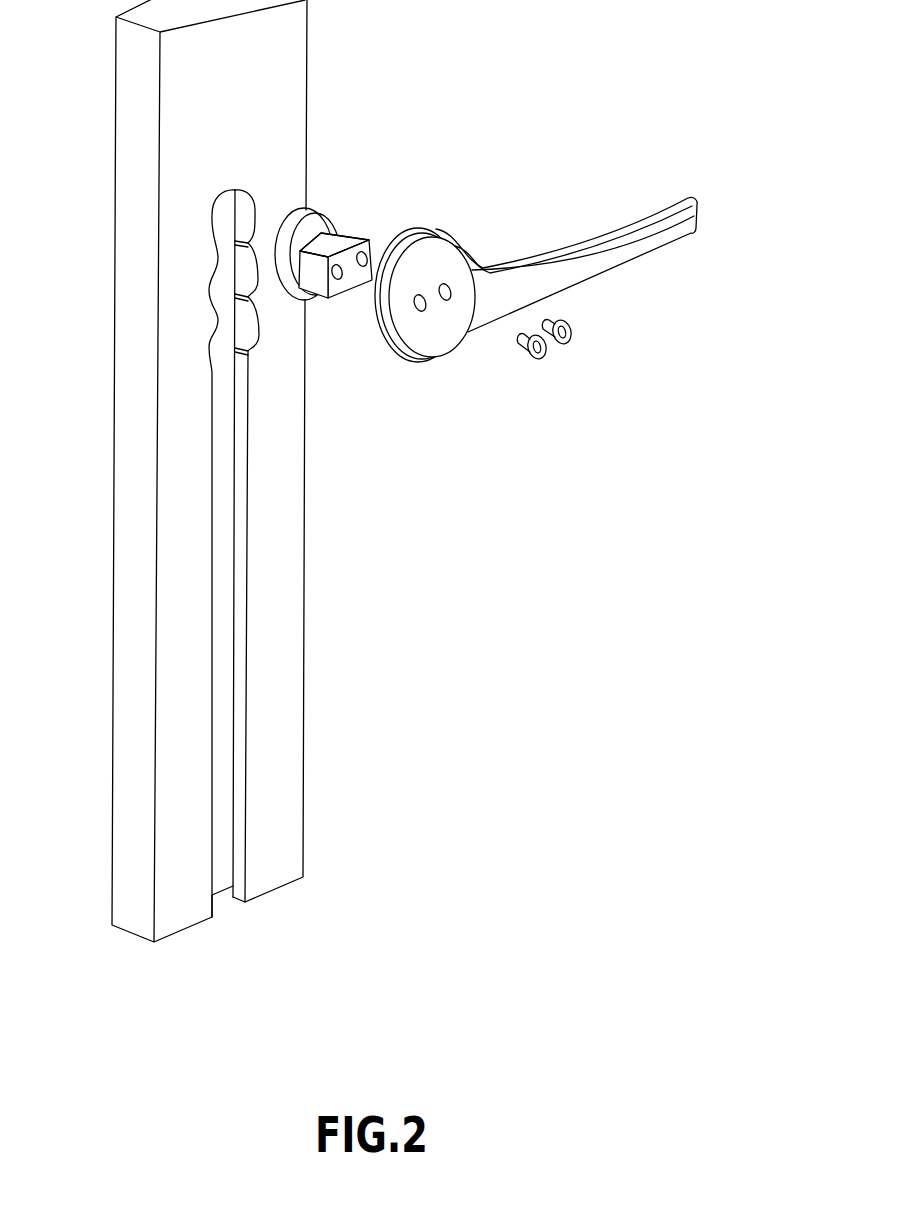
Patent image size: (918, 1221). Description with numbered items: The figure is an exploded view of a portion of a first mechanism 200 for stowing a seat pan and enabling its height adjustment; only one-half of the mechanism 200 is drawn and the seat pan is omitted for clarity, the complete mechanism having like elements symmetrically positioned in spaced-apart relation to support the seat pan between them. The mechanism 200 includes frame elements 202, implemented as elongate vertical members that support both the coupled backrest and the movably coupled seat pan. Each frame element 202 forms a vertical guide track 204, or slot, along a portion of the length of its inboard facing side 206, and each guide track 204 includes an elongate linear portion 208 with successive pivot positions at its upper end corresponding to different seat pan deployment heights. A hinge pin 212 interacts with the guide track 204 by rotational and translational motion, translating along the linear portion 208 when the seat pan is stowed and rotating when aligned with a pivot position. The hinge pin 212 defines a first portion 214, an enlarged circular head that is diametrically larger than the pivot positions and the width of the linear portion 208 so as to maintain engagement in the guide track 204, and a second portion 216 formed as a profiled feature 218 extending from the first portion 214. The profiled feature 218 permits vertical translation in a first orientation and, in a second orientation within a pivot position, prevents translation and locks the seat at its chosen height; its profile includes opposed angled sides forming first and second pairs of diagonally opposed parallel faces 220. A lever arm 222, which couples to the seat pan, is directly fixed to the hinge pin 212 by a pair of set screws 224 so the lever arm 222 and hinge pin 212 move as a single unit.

The first mechanism 200 is at (435, 122).
The frame element 202 is at (132, 152).
The vertical guide track 204 is at (213, 558).
The inboard facing side 206 is at (175, 702).
The elongate linear portion 208 is at (233, 775).
The hinge pin 212 is at (350, 208).
The first portion 214 is at (328, 216).
The second portion 216 is at (377, 262).
The profiled feature 218 is at (342, 296).
The diagonally opposed parallel faces 220 is at (368, 240).
The lever arm 222 is at (602, 233).
The set screws 224 is at (539, 360).